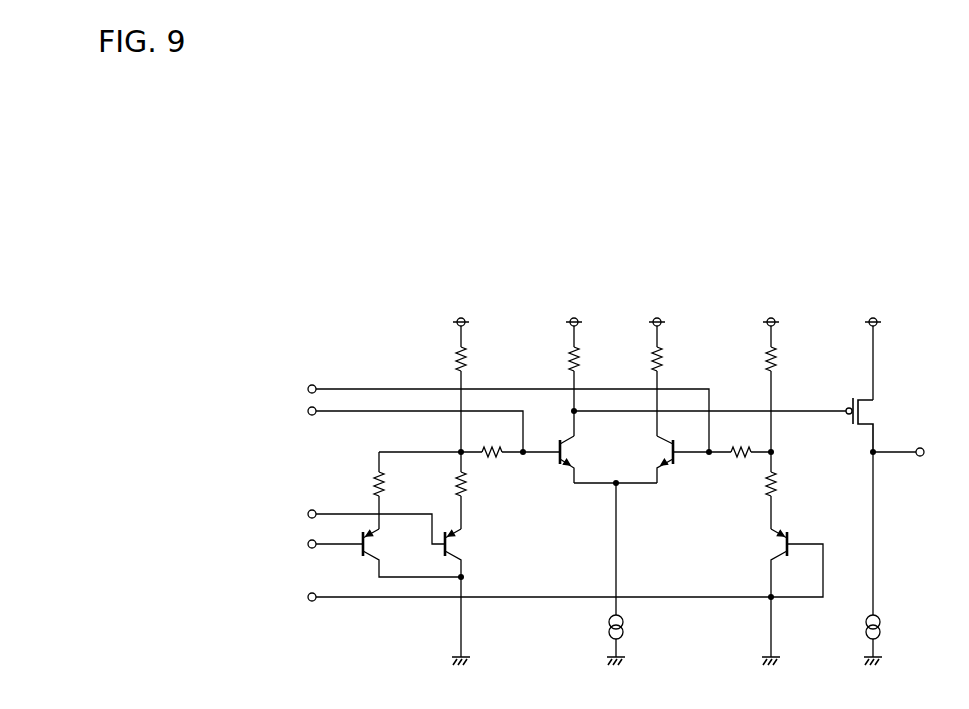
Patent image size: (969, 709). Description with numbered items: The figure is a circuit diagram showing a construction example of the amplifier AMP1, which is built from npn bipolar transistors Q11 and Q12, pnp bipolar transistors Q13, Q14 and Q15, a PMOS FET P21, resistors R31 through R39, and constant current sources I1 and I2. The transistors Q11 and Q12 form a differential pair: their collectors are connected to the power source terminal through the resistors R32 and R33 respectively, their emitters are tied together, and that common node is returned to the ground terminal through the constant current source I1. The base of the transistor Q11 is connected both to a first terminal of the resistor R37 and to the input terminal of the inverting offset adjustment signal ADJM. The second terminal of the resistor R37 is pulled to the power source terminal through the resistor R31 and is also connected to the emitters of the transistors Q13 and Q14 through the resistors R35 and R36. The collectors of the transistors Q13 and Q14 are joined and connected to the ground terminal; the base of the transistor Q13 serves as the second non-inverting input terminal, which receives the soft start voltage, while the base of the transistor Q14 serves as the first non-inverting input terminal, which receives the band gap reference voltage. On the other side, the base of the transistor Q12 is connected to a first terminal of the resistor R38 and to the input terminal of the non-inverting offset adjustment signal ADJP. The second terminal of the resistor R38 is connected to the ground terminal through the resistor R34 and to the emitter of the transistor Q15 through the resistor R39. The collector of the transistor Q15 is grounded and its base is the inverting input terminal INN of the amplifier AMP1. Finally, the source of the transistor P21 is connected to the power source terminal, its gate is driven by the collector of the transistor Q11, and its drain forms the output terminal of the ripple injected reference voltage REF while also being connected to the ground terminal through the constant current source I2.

The amplifier AMP1 is at (284, 253).
The resistor R31 is at (437, 359).
The resistor R32 is at (549, 359).
The resistor R33 is at (685, 359).
The resistor R34 is at (799, 359).
The resistor R35 is at (354, 484).
The resistor R36 is at (436, 484).
The resistor R37 is at (490, 462).
The resistor R38 is at (740, 462).
The resistor R39 is at (799, 484).
The npn bipolar transistor Q11 is at (556, 470).
The npn bipolar transistor Q12 is at (677, 470).
The pnp bipolar transistor Q13 is at (412, 553).
The pnp bipolar transistor Q14 is at (480, 593).
The pnp bipolar transistor Q15 is at (755, 593).
The PMOS FET P21 is at (749, 425).
The constant current source I1 is at (634, 570).
The constant current source I2 is at (891, 636).
The non-inverting offset adjustment signal ADJP is at (480, 416).
The inverting offset adjustment signal ADJM is at (386, 426).
The inverting input terminal INN is at (545, 575).
The ripple injected reference voltage REF is at (918, 451).